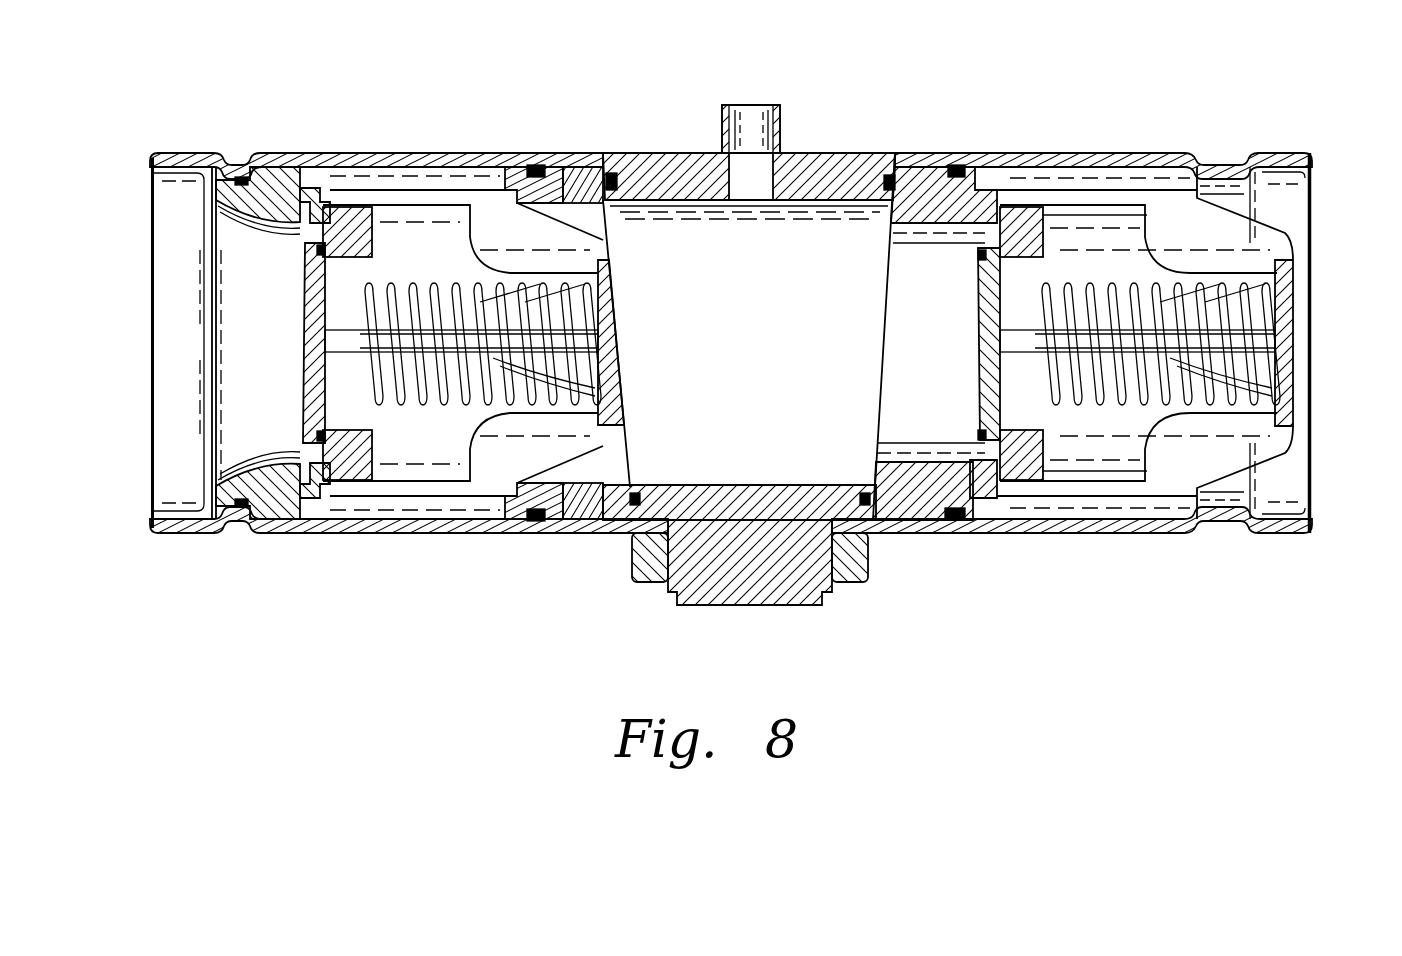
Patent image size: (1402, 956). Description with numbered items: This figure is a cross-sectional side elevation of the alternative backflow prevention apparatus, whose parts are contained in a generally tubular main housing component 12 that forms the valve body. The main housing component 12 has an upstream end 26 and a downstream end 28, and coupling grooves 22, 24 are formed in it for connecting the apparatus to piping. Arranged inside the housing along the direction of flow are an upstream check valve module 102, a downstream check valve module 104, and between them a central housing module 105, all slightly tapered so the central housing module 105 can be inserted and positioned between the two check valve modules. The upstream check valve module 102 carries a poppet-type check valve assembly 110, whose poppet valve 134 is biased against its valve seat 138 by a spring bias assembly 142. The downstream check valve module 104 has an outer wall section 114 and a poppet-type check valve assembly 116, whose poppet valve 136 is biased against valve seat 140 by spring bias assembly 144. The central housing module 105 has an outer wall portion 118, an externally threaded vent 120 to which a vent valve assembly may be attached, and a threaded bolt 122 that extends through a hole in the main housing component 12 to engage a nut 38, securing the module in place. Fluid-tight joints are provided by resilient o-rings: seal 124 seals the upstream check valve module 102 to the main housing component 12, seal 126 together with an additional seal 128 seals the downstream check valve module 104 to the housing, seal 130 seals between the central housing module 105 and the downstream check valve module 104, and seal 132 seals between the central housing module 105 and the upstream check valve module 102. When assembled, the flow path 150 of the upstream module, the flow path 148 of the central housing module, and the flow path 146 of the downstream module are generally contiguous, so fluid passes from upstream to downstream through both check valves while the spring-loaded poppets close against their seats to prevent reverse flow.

The main housing component 12 is at (423, 527).
The coupling groove 22 is at (1230, 520).
The coupling groove 24 is at (243, 168).
The upstream end 26 is at (1312, 212).
The downstream end 28 is at (150, 230).
The nut 38 is at (860, 563).
The upstream check valve module 102 is at (1123, 488).
The downstream check valve module 104 is at (327, 510).
The central housing module 105 is at (797, 202).
The poppet-type check valve assembly 110 is at (1212, 235).
The outer housing or wall section 114 is at (583, 165).
The poppet-type check valve assembly 116 is at (583, 450).
The outer wall or housing portion 118 is at (690, 153).
The vent 120 is at (781, 116).
The threaded bolt 122 is at (830, 592).
The resilient o-ring seal 124 is at (963, 163).
The resilient o-ring seal 126 is at (527, 162).
The additional o-ring seal 128 is at (247, 153).
The o-ring seal 130 is at (615, 195).
The o-ring seal 132 is at (885, 195).
The poppet valve 134 is at (987, 300).
The poppet valve 136 is at (303, 297).
The valve seat 138 is at (1020, 478).
The valve seat 140 is at (347, 212).
The spring bias assembly 142 is at (1237, 322).
The spring bias assembly 144 is at (563, 320).
The flow path 146 is at (417, 230).
The flow path 148 is at (828, 237).
The flow path 150 is at (1090, 232).